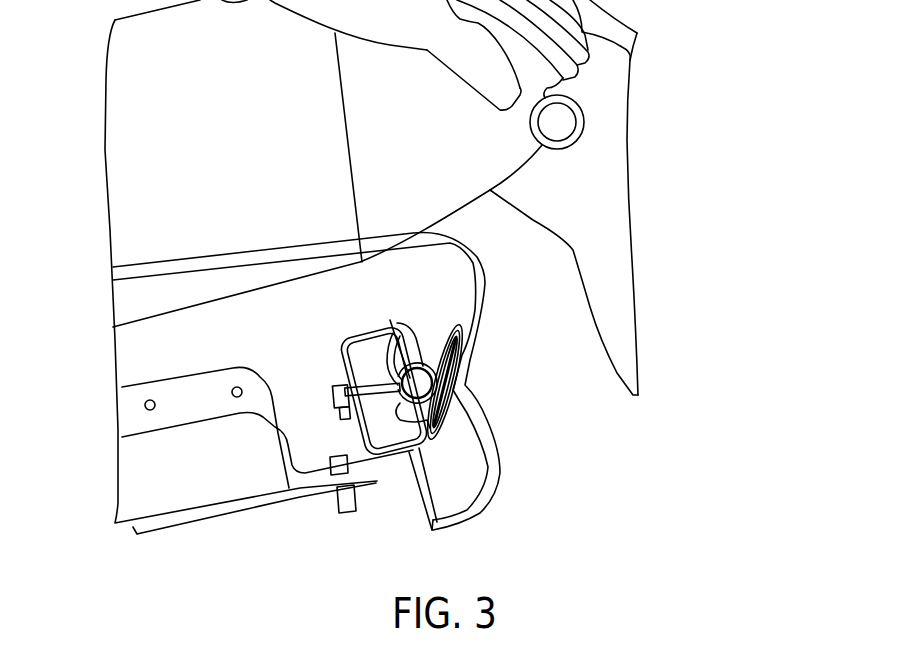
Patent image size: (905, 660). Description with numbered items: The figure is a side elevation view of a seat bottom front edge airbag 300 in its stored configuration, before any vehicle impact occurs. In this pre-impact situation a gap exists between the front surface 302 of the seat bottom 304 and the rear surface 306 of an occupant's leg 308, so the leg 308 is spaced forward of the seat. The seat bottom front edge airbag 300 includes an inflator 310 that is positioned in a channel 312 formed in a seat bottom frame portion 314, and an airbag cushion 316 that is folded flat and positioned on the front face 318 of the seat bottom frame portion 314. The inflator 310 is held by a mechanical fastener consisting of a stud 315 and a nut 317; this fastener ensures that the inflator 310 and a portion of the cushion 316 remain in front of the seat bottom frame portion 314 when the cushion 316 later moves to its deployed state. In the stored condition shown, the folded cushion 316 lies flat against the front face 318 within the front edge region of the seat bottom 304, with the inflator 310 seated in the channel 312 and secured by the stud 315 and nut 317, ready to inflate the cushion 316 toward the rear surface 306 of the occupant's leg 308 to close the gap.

The seat bottom front edge airbag 300 is at (486, 506).
The front surface 302 is at (498, 431).
The seat bottom 304 is at (108, 536).
The rear surface 306 is at (603, 353).
The occupant's leg 308 is at (676, 260).
The inflator 310 is at (430, 378).
The channel 312 is at (404, 329).
The seat bottom frame portion 314 is at (386, 419).
The stud 315 is at (373, 390).
The airbag cushion 316 is at (492, 450).
The nut 317 is at (333, 387).
The front face 318 is at (447, 412).